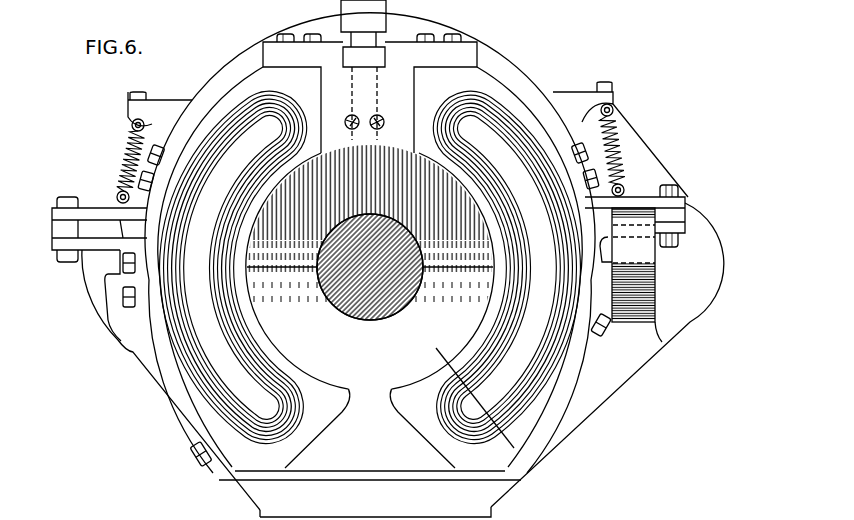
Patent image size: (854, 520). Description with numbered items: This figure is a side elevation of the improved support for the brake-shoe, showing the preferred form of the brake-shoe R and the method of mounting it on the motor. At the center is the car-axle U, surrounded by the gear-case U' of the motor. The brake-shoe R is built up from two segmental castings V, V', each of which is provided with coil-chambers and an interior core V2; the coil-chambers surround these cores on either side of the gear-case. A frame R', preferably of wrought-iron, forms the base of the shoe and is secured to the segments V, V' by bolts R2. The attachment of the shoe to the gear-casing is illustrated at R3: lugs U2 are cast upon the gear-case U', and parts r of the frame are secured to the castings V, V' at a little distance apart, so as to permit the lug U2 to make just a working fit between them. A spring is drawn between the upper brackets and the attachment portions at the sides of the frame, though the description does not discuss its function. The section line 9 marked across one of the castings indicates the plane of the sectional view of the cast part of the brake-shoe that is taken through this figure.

The attachment of the shoe to the gear-casing R3 is at (725, 217).
The parts of the frame r is at (691, 238).
The lugs U2 is at (667, 288).
The interior cores V2 is at (370, 267).
The car-axle U is at (380, 267).
The gear-case of the motor U' is at (370, 266).
The segmental casting V is at (317, 427).
The segmental casting V' is at (422, 424).
The brake-shoe R is at (370, 236).
The frame R' is at (370, 494).
The bolts R2 is at (201, 449).
The section line 9 9 is at (486, 408).
The suspension spring is at (371, 153).